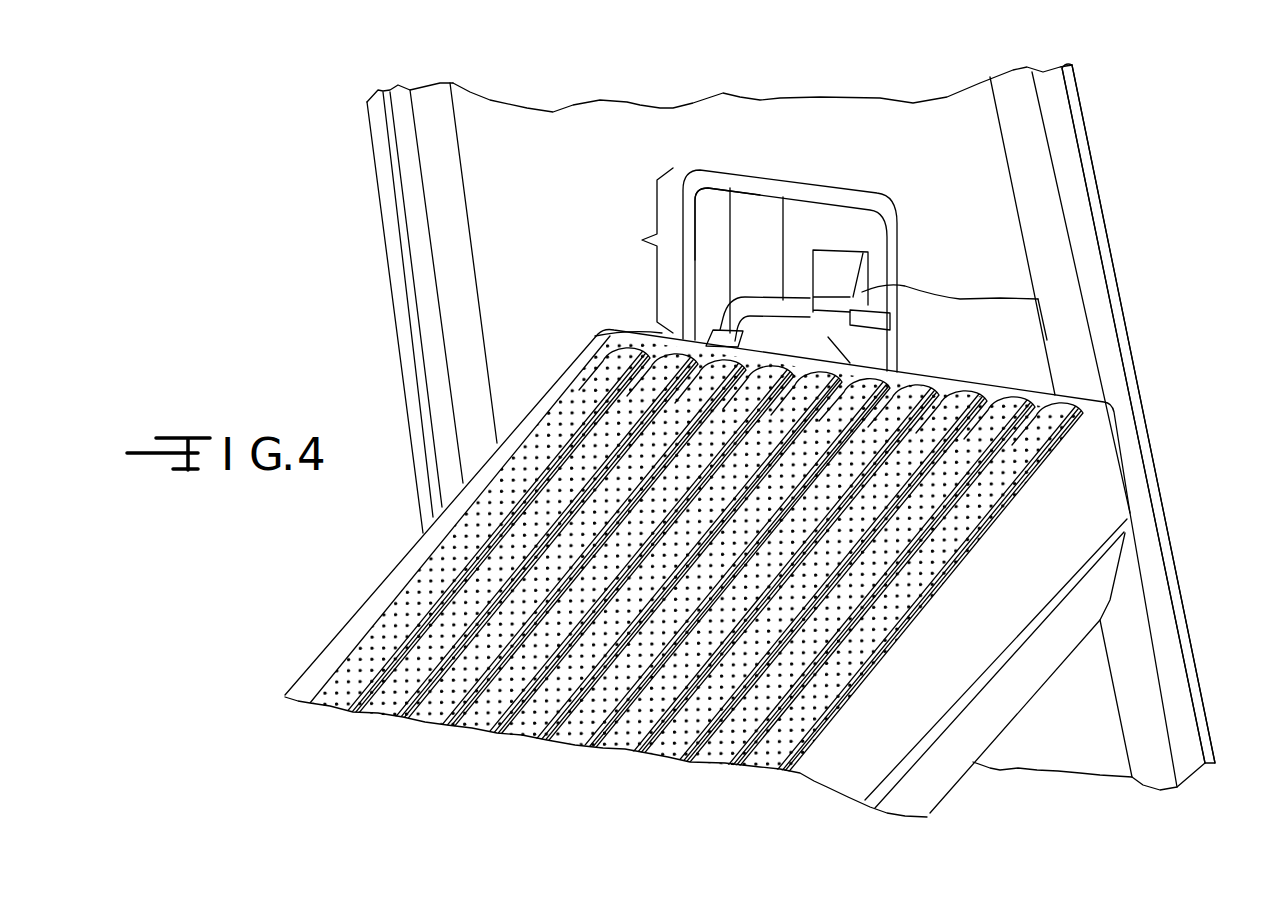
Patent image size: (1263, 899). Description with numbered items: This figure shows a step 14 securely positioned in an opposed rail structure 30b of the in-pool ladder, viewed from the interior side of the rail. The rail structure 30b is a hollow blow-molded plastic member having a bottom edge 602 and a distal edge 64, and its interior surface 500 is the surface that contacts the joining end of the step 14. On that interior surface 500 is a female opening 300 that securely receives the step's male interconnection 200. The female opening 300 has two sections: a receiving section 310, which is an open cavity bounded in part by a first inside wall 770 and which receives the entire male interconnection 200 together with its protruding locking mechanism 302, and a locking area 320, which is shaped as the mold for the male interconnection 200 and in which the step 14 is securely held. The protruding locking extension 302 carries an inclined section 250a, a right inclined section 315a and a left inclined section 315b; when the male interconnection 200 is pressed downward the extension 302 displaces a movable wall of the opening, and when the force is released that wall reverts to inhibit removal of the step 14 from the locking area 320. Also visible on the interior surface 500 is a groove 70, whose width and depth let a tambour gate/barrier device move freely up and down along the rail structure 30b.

The step 14 is at (1090, 483).
The opposed rail structure 30b is at (1173, 557).
The distal edge 64 is at (1120, 259).
The bottom edge 602 is at (1133, 268).
The groove 70 is at (410, 227).
The male interconnection 200 is at (915, 372).
The inclined section 250a is at (838, 278).
The female opening 300 is at (892, 243).
The protruding locking mechanism 302 is at (840, 265).
The receiving section 310 is at (635, 250).
The right inclined section 315a is at (1038, 298).
The left inclined section 315b is at (813, 278).
The locking area 320 is at (722, 330).
The interior surface 500 is at (950, 178).
The first inside wall 770 is at (710, 222).